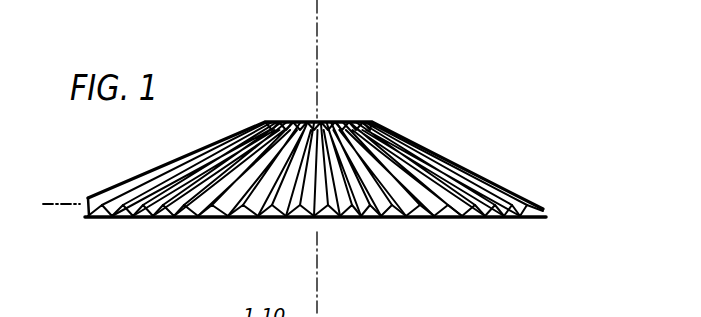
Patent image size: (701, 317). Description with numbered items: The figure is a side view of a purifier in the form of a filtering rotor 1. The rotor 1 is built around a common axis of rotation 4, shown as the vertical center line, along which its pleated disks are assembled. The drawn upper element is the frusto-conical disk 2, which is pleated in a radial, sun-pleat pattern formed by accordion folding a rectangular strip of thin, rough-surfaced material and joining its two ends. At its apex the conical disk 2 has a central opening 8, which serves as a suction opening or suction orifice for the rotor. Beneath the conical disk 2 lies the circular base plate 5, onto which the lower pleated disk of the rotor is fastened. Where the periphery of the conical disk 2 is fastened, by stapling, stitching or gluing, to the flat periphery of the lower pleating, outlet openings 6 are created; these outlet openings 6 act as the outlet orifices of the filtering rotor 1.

The filtering rotor 1 is at (294, 156).
The disk 2 is at (392, 164).
The axis of rotation 4 is at (318, 57).
The circular base plate 5 is at (467, 220).
The outlet openings 6 is at (343, 258).
The central opening 8 is at (301, 119).